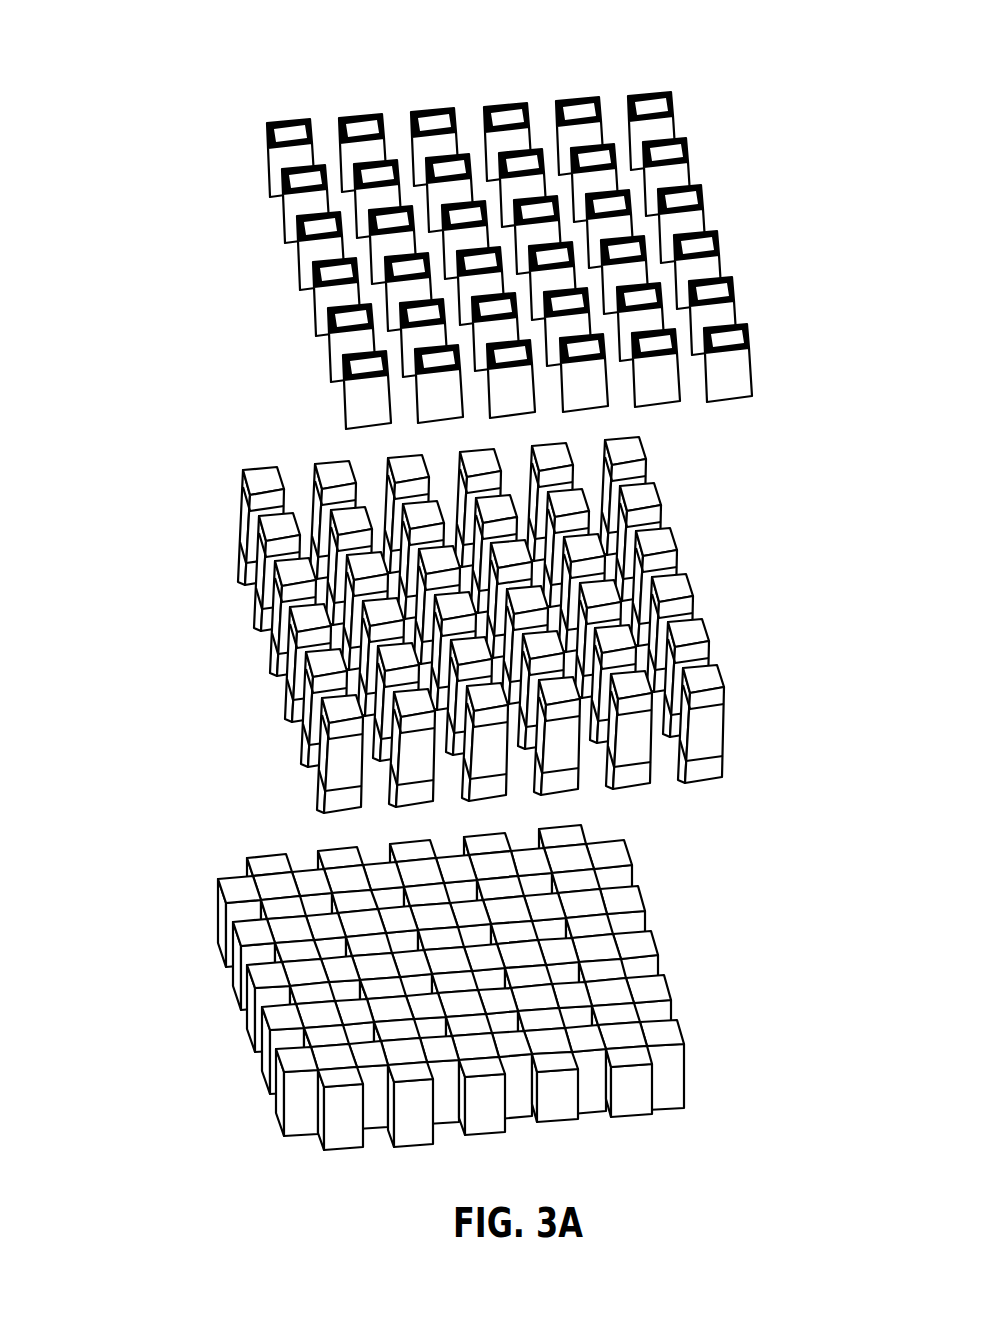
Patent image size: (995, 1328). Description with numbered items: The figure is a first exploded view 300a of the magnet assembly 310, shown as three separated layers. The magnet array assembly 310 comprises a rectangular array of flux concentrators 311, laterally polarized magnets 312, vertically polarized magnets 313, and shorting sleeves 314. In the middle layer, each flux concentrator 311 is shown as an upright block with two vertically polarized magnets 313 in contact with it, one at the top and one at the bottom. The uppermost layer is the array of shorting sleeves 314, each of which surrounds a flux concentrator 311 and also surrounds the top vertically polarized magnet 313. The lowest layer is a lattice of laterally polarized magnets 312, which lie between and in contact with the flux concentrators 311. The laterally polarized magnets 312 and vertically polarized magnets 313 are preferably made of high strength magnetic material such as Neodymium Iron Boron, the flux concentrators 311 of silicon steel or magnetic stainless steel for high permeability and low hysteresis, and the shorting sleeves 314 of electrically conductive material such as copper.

The first exploded view 300a is at (492, 39).
The magnet assembly 310 is at (172, 104).
The flux concentrator 311 is at (708, 722).
The laterally polarized magnet 312 is at (653, 1003).
The vertically polarized magnet 313 is at (708, 683).
The shorting sleeve 314 is at (335, 341).